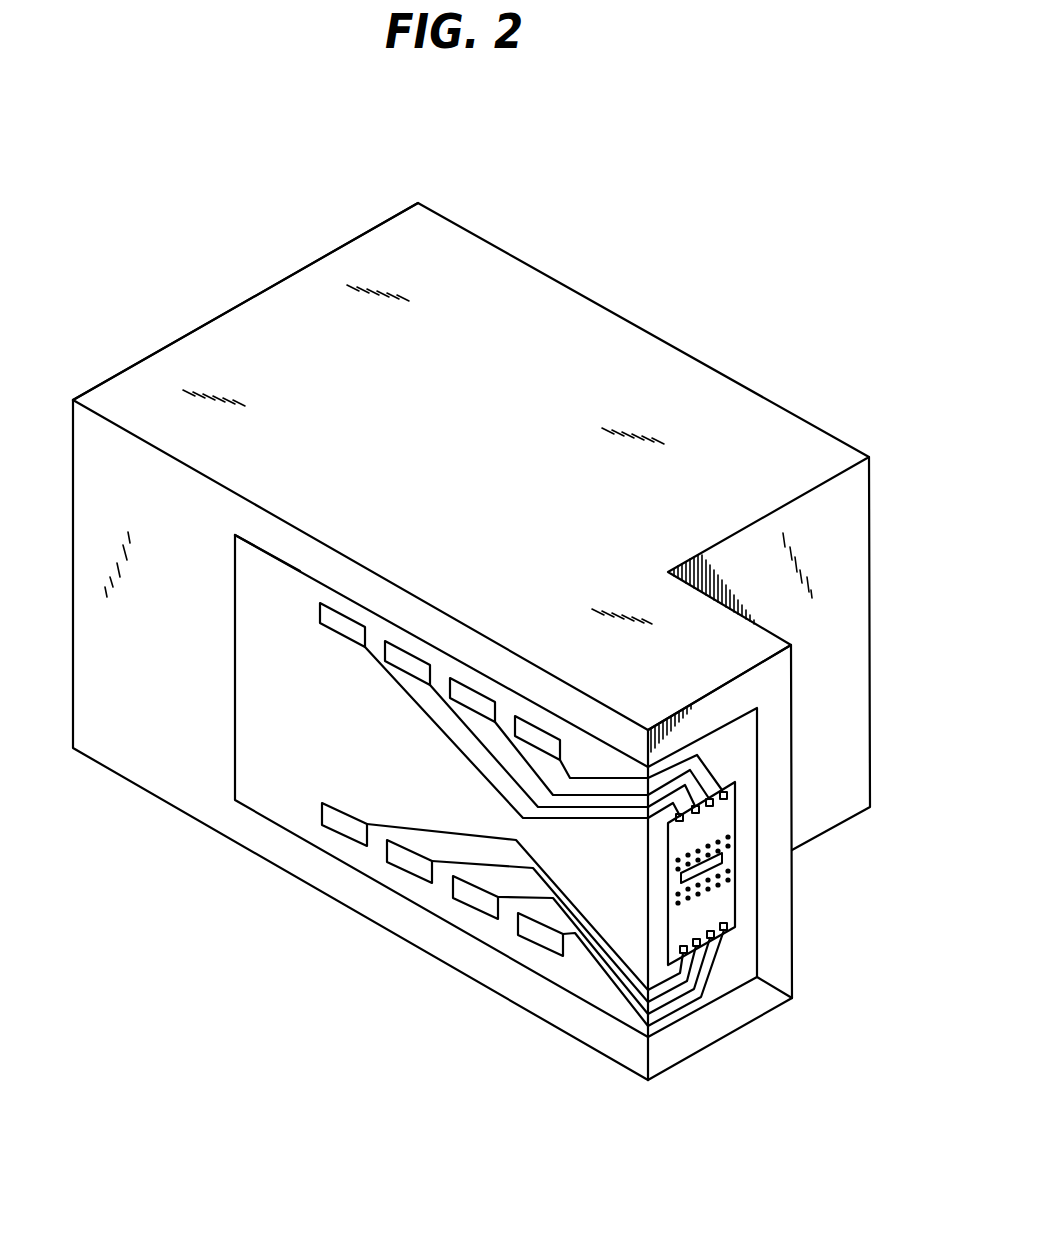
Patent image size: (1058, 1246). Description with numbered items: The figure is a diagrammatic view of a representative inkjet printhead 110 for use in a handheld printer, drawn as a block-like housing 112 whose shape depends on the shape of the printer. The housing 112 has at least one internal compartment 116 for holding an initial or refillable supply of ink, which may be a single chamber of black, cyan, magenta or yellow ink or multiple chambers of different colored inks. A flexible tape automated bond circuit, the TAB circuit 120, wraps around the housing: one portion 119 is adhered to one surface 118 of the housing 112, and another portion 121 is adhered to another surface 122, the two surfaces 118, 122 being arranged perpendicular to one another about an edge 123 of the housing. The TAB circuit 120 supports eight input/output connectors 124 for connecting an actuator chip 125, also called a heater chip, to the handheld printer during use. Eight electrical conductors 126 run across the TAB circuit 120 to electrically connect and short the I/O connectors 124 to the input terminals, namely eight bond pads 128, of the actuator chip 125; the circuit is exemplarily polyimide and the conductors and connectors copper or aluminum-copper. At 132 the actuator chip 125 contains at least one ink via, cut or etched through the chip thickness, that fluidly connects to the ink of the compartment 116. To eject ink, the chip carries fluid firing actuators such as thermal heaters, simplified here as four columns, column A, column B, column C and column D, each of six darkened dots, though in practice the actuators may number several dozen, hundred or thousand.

The inkjet printhead 110 is at (717, 332).
The housing 112 is at (222, 313).
The internal compartment 116 is at (476, 451).
The surface 118 is at (178, 630).
The portion of flexible circuit 119 is at (252, 543).
The tape automated bond (TAB) circuit 120 is at (235, 692).
The another portion 121 is at (756, 720).
The another surface 122 is at (683, 1040).
The edge 123 is at (642, 1047).
The input/output (I/O) connectors 124 is at (402, 648).
The actuator chip 125 is at (731, 772).
The electrical conductors 126 is at (600, 793).
The bond pads 128 is at (678, 820).
The ink via 132 is at (724, 858).
The column A is at (731, 838).
The column B is at (731, 847).
The column C is at (731, 872).
The column D is at (731, 881).